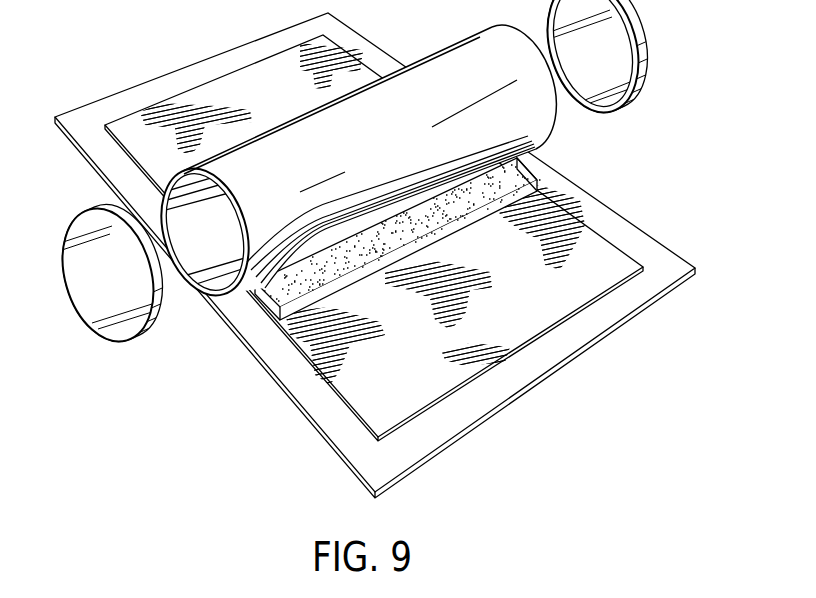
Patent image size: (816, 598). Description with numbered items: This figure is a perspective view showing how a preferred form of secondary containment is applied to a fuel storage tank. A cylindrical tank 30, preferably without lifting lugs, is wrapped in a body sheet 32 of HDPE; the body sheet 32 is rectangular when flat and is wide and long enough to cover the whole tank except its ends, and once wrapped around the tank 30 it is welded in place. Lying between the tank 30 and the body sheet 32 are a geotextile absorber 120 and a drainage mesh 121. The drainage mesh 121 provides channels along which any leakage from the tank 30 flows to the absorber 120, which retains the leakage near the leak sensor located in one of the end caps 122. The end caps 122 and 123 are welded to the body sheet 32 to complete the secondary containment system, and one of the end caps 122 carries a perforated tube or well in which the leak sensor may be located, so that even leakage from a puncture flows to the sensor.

The cylindrical tank 30 is at (448, 62).
The body sheet 32 is at (650, 233).
The geotextile absorber 120 is at (520, 170).
The drainage mesh 121 is at (572, 213).
The end cap 122 is at (107, 338).
The end cap 123 is at (631, 22).